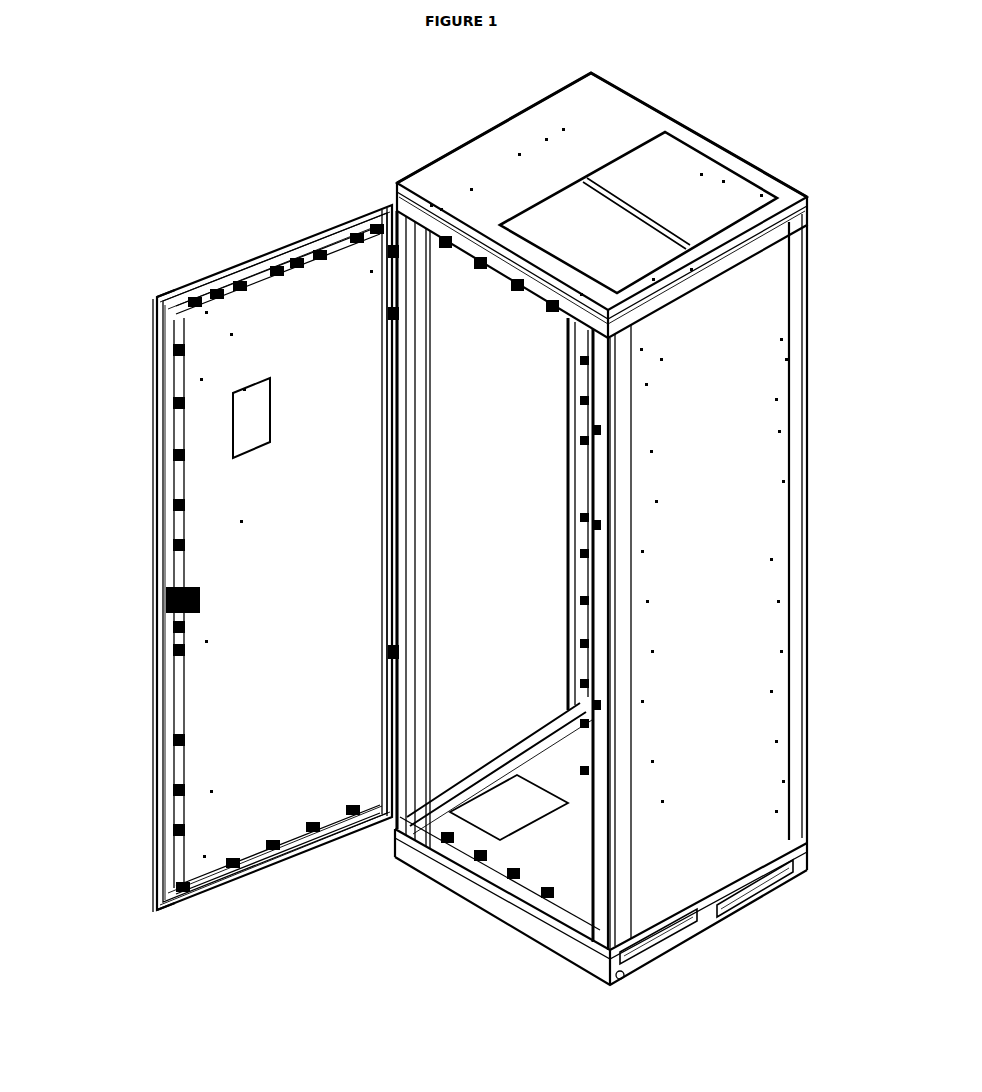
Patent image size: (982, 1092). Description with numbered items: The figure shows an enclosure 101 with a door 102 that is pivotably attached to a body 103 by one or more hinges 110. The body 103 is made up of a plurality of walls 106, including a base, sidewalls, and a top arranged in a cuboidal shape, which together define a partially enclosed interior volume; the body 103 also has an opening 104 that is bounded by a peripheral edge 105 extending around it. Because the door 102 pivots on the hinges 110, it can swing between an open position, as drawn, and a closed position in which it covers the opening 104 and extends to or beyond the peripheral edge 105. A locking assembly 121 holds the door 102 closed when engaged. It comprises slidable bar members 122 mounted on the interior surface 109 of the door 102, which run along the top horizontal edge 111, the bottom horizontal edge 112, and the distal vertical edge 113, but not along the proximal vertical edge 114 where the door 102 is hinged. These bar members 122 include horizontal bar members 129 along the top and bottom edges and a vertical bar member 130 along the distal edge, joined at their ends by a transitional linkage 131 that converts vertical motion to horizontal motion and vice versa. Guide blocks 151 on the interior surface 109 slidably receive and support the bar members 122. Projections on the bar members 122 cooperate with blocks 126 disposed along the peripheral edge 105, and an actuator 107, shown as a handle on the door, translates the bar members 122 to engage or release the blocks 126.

The enclosure 101 is at (734, 105).
The door 102 is at (160, 863).
The body 103 is at (782, 196).
The opening 104 is at (465, 790).
The peripheral edge 105 is at (593, 777).
The walls 106 is at (790, 520).
The actuator 107 is at (160, 600).
The interior surface 109 is at (286, 562).
The hinges 110 is at (388, 258).
The top horizontal edge 111 is at (318, 230).
The bottom horizontal edge 112 is at (307, 860).
The distal vertical edge 113 is at (153, 710).
The proximal vertical edge 114 is at (387, 635).
The locking assembly 121 is at (340, 936).
The bar members 122 is at (158, 417).
The blocks 126 is at (453, 238).
The horizontal bar members 129 is at (257, 255).
The vertical bar member 130 is at (172, 478).
The transitional linkage 131 is at (190, 287).
The guide blocks 151 is at (190, 357).